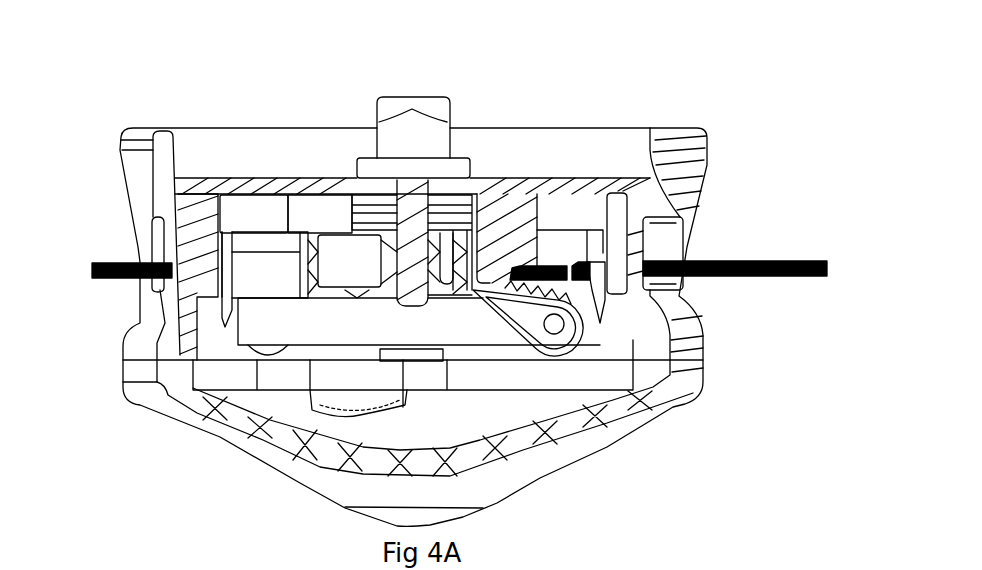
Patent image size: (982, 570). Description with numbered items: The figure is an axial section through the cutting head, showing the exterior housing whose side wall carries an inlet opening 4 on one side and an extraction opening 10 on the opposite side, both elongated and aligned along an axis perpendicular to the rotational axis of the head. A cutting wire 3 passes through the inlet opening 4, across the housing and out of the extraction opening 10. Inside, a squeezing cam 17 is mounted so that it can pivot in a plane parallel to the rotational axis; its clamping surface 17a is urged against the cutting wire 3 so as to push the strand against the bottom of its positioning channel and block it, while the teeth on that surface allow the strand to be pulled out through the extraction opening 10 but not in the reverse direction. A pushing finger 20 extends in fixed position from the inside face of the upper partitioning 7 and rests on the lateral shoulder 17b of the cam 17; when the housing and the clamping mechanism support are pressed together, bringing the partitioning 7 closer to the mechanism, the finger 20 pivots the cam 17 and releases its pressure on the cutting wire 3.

The cutting wire 3 is at (107, 263).
The inlet opening 4 is at (657, 247).
The partitioning 7 is at (260, 187).
The extraction opening 10 is at (165, 248).
The squeezing cam 17 is at (563, 357).
The clamping surface 17a is at (540, 270).
The lateral shoulder 17b is at (537, 312).
The pushing finger 20 is at (505, 230).